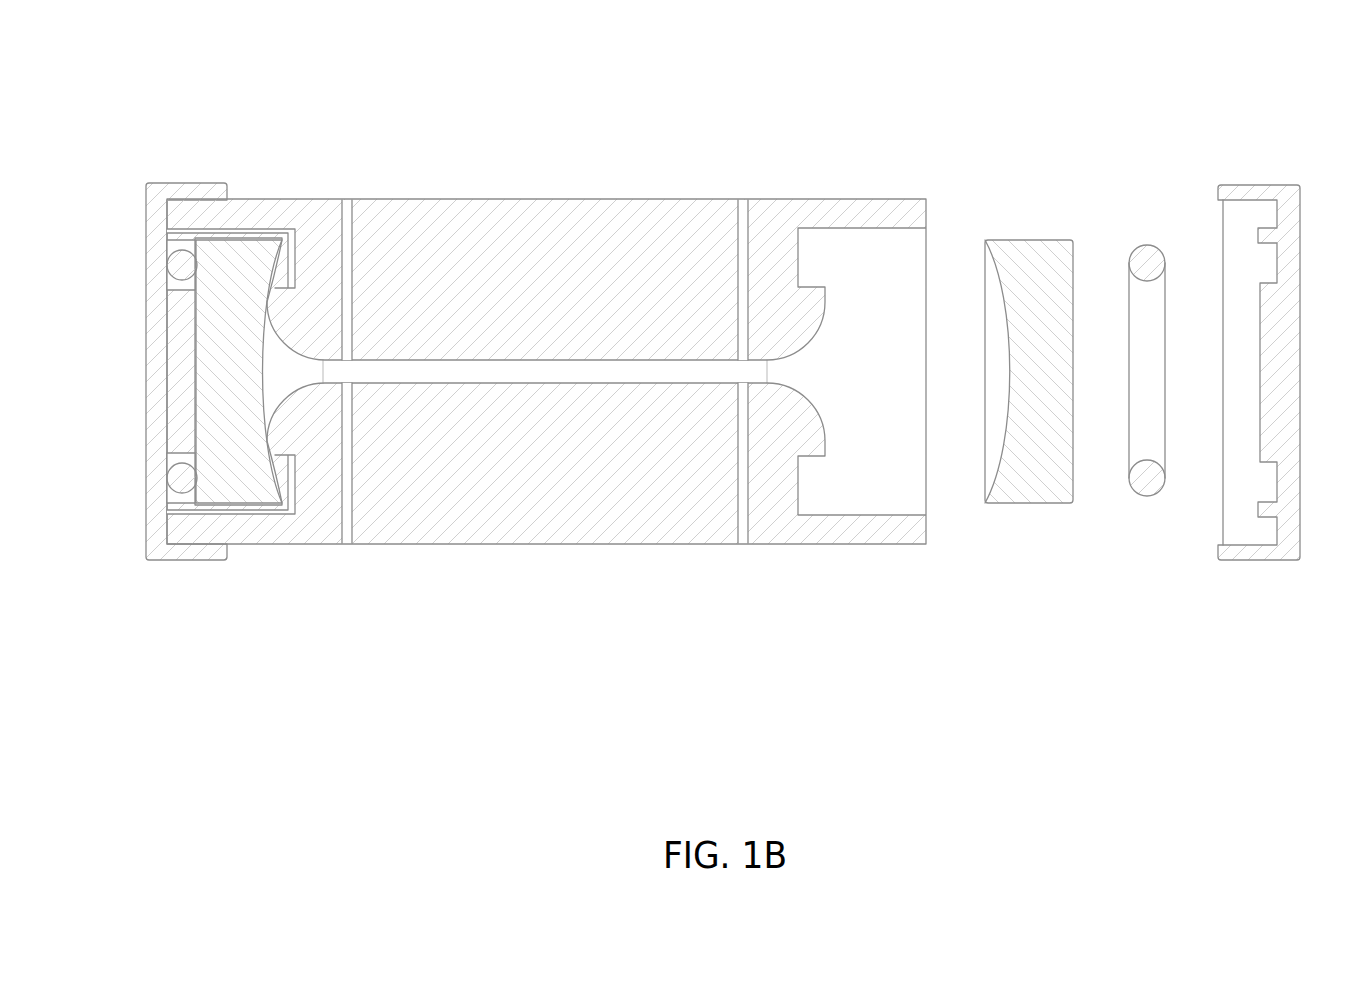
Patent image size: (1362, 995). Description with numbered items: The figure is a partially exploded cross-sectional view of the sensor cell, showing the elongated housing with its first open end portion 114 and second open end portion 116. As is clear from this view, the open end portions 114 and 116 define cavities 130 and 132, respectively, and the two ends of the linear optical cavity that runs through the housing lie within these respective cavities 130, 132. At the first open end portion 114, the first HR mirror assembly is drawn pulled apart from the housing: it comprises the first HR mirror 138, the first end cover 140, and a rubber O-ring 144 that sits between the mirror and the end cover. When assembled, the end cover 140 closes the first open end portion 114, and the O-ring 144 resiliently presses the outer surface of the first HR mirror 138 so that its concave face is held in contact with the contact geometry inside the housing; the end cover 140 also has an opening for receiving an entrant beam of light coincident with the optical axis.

The first open end portion 114 is at (559, 393).
The second open end portion 116 is at (240, 200).
The cavity 130 is at (878, 493).
The cavity 132 is at (190, 388).
The first HR mirror 138 is at (1047, 465).
The first end cover 140 is at (1300, 268).
The rubber O-ring 144 is at (1142, 307).